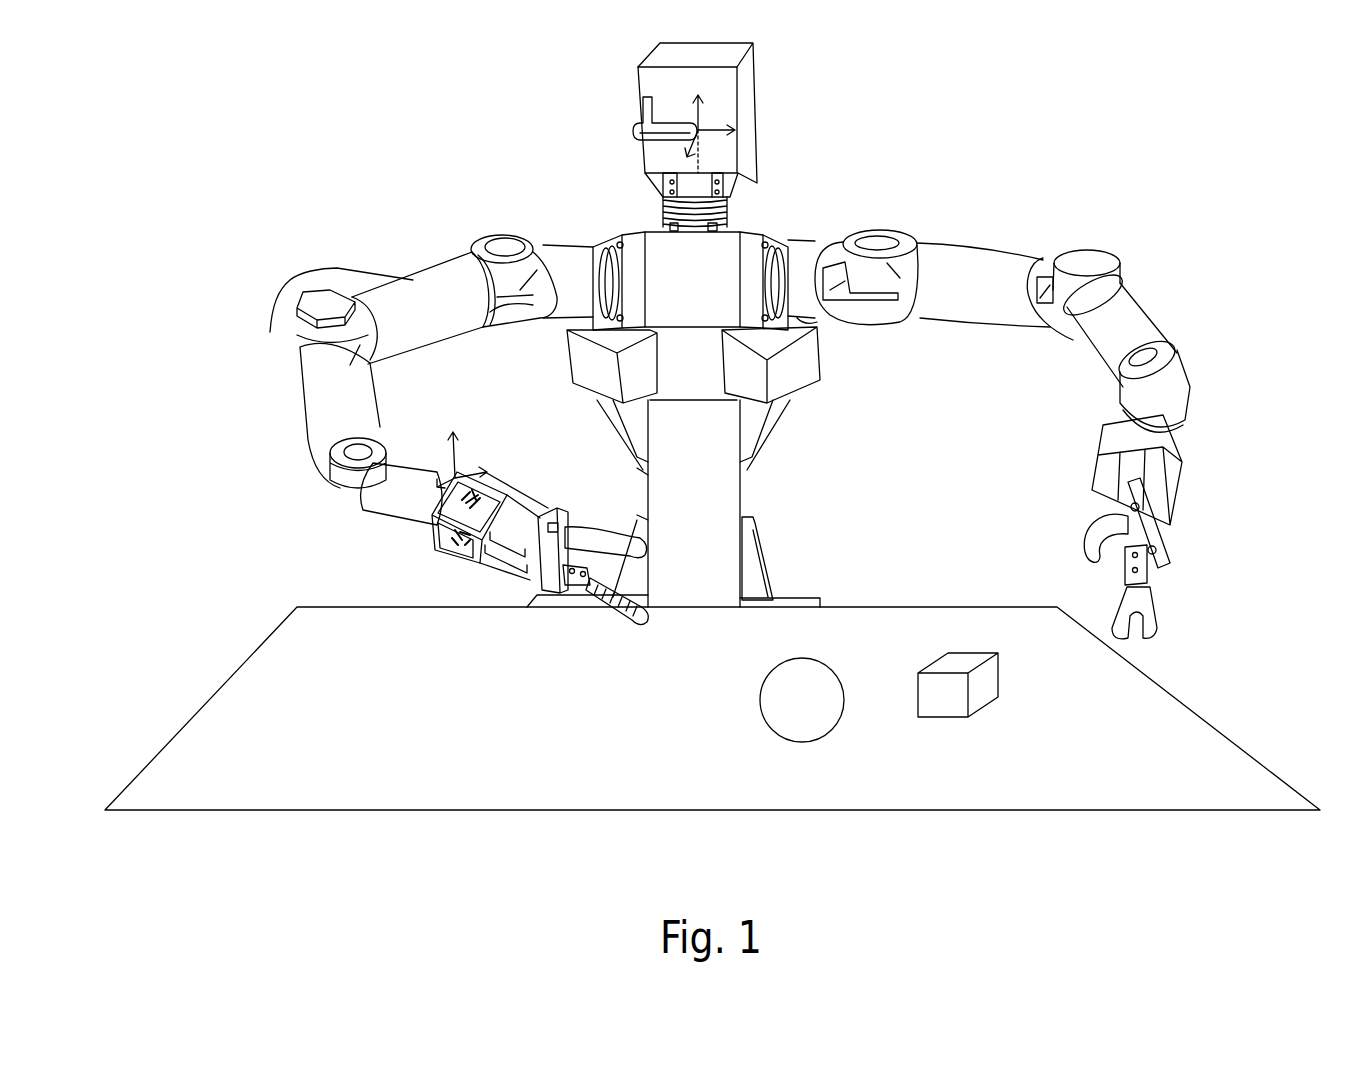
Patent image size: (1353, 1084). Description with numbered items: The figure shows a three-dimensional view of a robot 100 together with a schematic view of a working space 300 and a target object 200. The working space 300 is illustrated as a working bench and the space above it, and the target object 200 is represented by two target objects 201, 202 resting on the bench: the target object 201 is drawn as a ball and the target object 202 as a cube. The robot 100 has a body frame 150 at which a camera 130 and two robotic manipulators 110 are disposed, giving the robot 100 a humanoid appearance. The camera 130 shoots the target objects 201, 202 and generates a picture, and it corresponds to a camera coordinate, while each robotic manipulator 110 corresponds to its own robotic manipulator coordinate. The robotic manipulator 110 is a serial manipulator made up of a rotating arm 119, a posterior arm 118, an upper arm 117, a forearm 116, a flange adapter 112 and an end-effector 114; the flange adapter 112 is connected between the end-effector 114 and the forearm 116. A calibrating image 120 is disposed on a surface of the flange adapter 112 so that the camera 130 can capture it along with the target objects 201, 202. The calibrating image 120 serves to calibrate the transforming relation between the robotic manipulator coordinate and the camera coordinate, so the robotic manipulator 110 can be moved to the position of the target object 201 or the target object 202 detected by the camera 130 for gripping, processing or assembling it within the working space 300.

The robot 100 is at (280, 216).
The robotic manipulator 110 is at (400, 727).
The flange adapter 112 is at (437, 545).
The end-effector 114 is at (613, 603).
The forearm 116 is at (393, 513).
The upper arm 117 is at (322, 432).
The posterior arm 118 is at (298, 284).
The rotating arm 119 is at (582, 262).
The calibrating image 120 is at (487, 540).
The camera 130 is at (633, 134).
The body frame 150 is at (722, 250).
The target object 200 is at (922, 780).
The target object 201 is at (823, 758).
The target object 202 is at (988, 724).
The working space 300 is at (1212, 661).